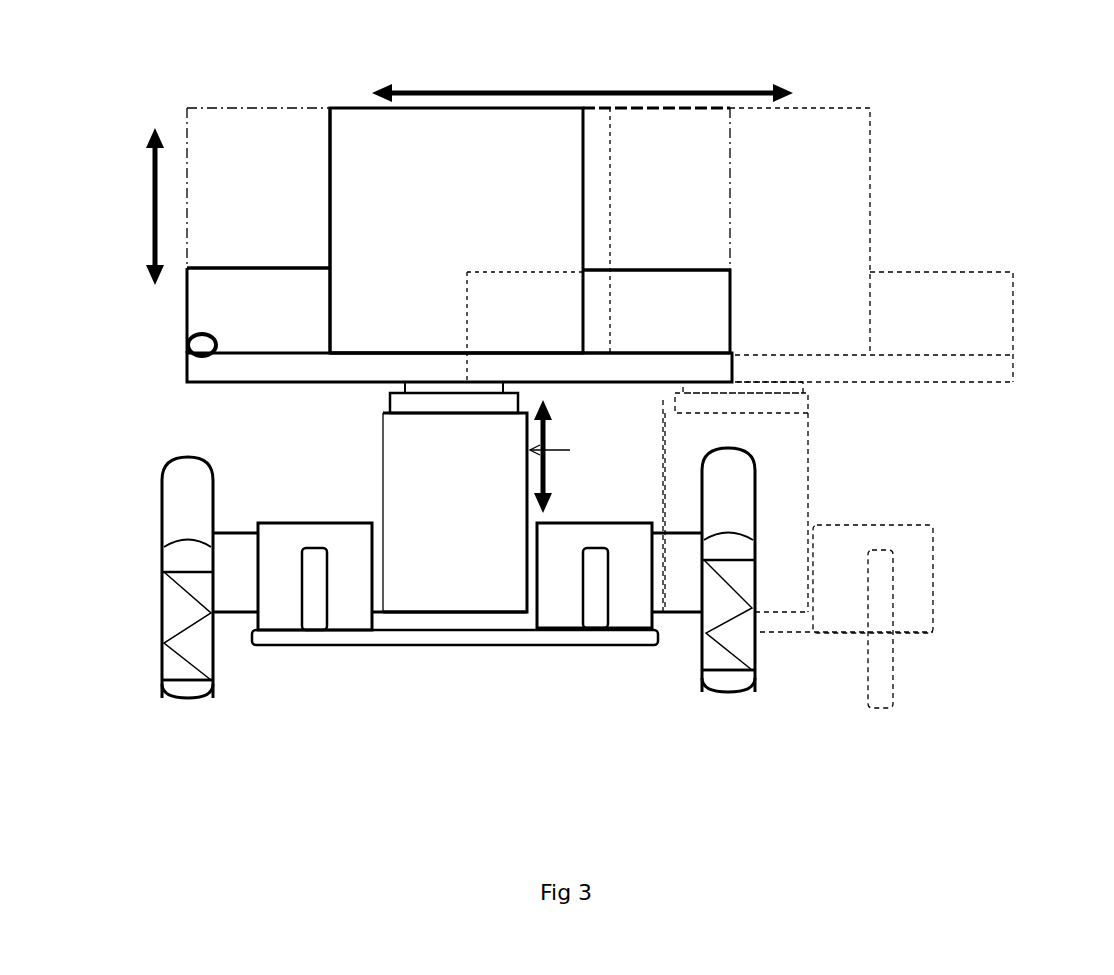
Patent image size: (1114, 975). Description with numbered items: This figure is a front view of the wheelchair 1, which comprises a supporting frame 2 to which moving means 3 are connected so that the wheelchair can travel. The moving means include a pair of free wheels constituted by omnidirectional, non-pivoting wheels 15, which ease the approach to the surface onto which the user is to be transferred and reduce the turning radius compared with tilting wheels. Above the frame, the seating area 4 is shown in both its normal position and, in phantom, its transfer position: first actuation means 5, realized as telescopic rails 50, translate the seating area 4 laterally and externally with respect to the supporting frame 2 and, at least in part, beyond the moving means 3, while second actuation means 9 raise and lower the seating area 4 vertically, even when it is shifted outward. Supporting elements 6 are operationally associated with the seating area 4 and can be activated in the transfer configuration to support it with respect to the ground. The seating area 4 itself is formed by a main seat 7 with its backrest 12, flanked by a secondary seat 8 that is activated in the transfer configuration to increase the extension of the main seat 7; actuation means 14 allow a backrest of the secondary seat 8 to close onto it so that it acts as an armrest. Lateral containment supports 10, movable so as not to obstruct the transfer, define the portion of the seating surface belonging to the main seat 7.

The wheelchair 1 is at (160, 103).
The supporting frame 2 is at (404, 655).
The moving means 3 is at (153, 615).
The seating area 4 is at (396, 335).
The first actuation means 5 is at (668, 642).
The supporting elements 6 is at (316, 625).
The main seat 7 is at (443, 350).
The secondary seat 8 is at (175, 373).
The second actuation means 9 is at (648, 450).
The lateral containment supports 10 is at (182, 292).
The backrest 12 is at (438, 188).
The actuation means 14 is at (186, 336).
The omnidirectional non-pivoting wheels 15 is at (190, 694).
The telescopic rails 50 is at (443, 616).